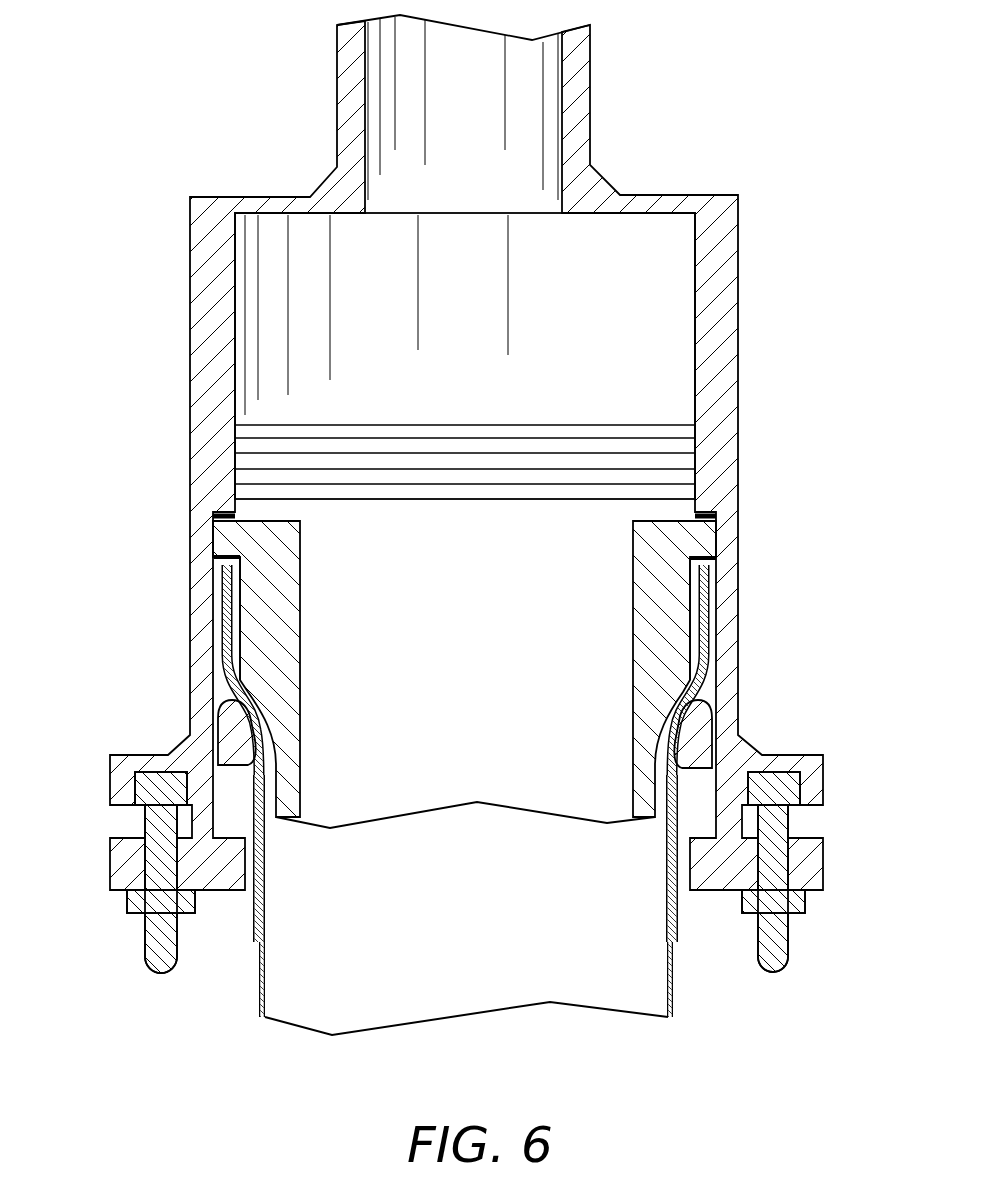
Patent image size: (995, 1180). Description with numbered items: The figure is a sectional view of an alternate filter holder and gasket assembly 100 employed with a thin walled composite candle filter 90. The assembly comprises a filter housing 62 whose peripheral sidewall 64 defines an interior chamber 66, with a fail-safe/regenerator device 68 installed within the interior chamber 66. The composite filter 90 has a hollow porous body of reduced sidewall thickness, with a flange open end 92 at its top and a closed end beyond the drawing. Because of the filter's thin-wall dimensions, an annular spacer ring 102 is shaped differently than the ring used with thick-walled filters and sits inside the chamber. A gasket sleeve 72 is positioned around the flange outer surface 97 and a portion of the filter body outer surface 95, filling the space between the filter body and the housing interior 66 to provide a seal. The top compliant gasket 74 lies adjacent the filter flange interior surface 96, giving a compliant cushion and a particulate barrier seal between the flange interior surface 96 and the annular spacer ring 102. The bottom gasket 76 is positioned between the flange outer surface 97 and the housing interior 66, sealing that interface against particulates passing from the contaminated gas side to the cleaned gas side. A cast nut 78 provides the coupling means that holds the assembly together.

The filter holder and gasket assembly 100 is at (148, 262).
The filter housing 62 is at (740, 345).
The peripheral sidewall 64 is at (200, 343).
The interior chamber 66 is at (675, 278).
The fail-safe/regenerator device 68 is at (648, 255).
The gasket sleeve 72 is at (705, 638).
The top compliant gasket 74 is at (697, 628).
The bottom gasket 76 is at (700, 712).
The cast nut 78 is at (828, 866).
The thin walled composite candle filter 90 is at (670, 972).
The flange open end 92 is at (228, 563).
The filter body outer surface 95 is at (267, 912).
The filter flange interior surface 96 is at (238, 580).
The flange outer surface 97 is at (226, 650).
The annular spacer ring 102 is at (712, 540).